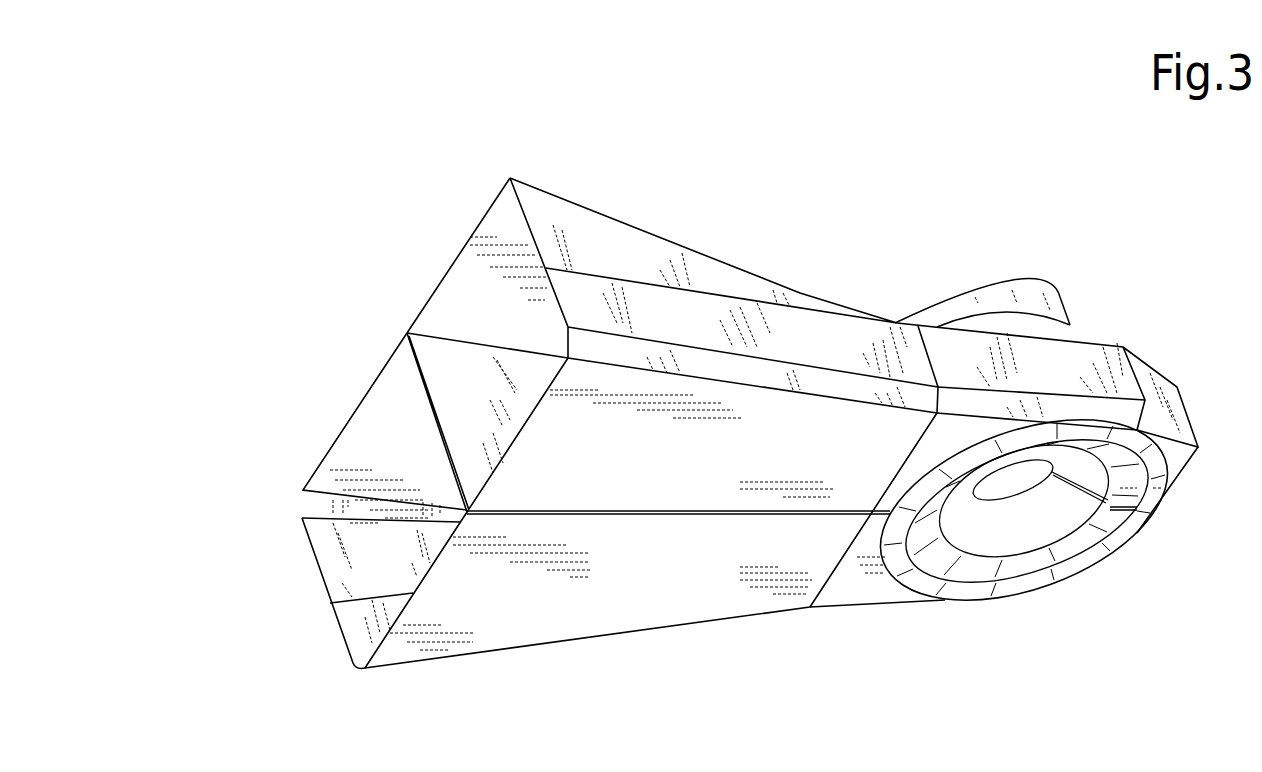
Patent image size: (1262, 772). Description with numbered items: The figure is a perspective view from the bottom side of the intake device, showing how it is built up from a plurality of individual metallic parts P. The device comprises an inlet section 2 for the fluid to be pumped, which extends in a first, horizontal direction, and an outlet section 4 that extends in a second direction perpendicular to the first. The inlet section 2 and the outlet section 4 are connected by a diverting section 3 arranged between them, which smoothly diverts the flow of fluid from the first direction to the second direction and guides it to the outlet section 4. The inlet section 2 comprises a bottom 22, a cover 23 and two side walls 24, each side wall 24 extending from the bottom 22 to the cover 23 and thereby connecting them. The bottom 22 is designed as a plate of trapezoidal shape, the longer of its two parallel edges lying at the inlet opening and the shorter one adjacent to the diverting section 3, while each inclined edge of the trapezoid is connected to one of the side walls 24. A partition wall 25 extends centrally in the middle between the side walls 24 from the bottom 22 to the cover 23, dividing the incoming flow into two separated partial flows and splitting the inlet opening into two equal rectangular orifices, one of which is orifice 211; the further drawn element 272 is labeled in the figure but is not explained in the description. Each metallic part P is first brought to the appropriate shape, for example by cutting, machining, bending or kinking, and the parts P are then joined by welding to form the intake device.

The inlet section 2 is at (728, 246).
The diverting section 3 is at (1160, 356).
The outlet section 4 is at (1062, 282).
The bottom 22 is at (683, 572).
The cover 23 is at (462, 248).
The side wall 24 is at (607, 258).
The partition wall 25 is at (475, 405).
The orifice 211 is at (475, 312).
The lower end face 272 is at (368, 455).
The metallic part P is at (815, 338).